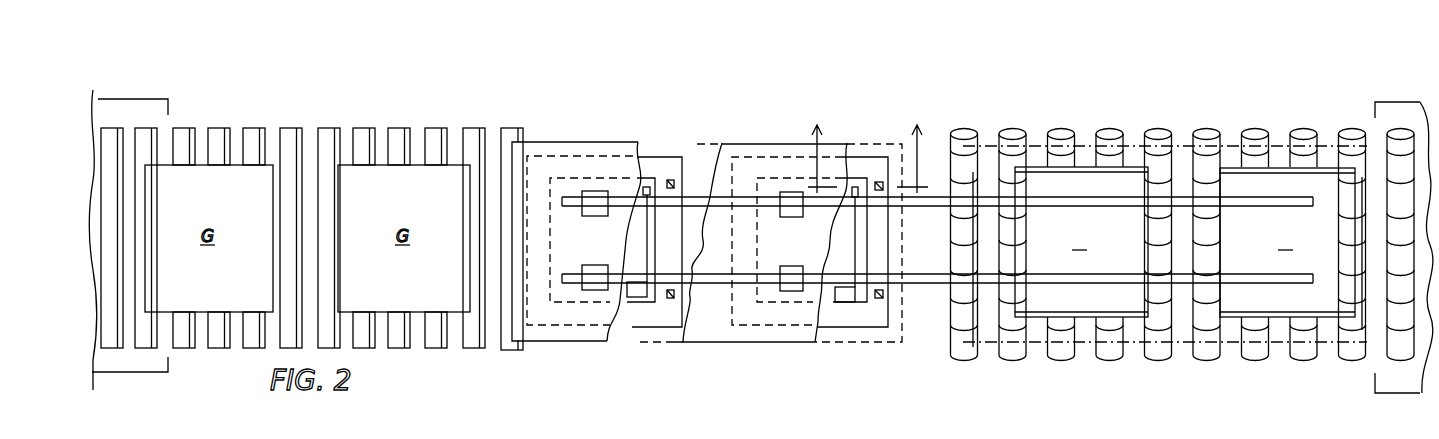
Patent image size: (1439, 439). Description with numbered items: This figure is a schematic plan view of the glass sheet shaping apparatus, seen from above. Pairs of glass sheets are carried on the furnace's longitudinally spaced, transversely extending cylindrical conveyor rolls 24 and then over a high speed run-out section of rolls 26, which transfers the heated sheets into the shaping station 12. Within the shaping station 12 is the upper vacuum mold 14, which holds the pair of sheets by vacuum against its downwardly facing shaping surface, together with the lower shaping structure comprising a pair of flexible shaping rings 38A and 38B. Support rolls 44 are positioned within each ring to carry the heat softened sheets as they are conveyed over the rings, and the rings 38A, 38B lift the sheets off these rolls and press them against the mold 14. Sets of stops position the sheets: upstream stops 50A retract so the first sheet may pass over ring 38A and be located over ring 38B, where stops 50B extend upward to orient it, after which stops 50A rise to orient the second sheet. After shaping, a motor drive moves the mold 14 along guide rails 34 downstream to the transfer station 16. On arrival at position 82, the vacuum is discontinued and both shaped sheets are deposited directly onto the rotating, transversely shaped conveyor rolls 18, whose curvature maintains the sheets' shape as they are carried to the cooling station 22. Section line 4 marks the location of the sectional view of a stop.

The shaping station 12 is at (700, 65).
The upper vacuum mold 14 is at (548, 142).
The transfer station 16 is at (1185, 73).
The conveyor rolls 18 is at (1110, 357).
The cooling station 22 is at (1405, 76).
The conveyor rolls 24 is at (150, 127).
The run-out section of rolls 26 is at (367, 127).
The guide rails 34 is at (992, 195).
The shaping ring 38A is at (652, 157).
The shaping ring 38B is at (860, 157).
The support rolls 44 is at (637, 300).
The upstream stops 50A is at (672, 180).
The stops 50B is at (880, 183).
The position 82 is at (1132, 147).
The section line 4- 4 is at (868, 144).